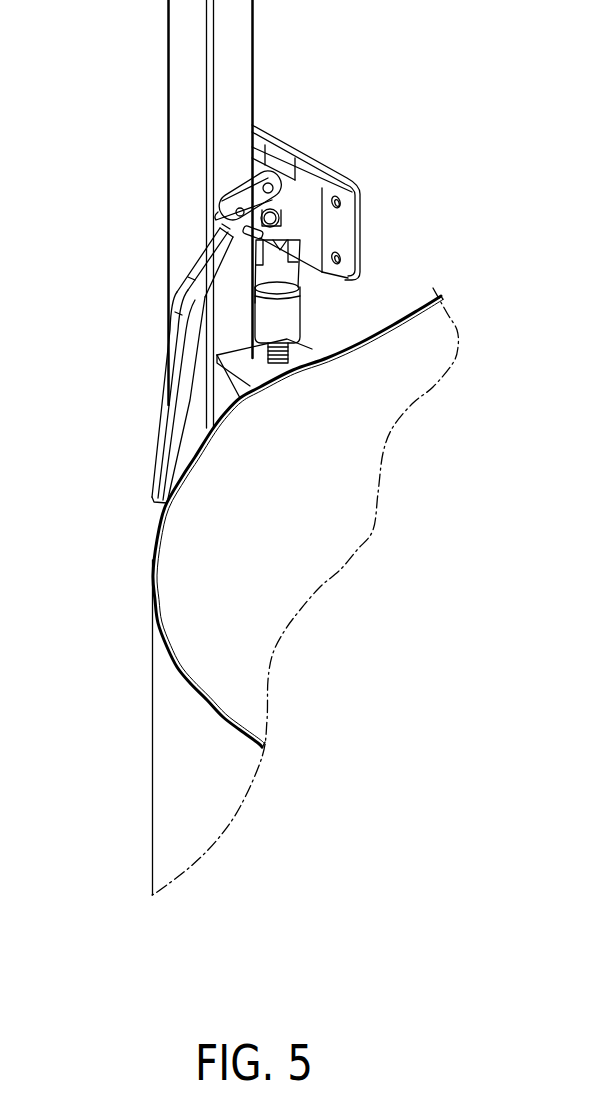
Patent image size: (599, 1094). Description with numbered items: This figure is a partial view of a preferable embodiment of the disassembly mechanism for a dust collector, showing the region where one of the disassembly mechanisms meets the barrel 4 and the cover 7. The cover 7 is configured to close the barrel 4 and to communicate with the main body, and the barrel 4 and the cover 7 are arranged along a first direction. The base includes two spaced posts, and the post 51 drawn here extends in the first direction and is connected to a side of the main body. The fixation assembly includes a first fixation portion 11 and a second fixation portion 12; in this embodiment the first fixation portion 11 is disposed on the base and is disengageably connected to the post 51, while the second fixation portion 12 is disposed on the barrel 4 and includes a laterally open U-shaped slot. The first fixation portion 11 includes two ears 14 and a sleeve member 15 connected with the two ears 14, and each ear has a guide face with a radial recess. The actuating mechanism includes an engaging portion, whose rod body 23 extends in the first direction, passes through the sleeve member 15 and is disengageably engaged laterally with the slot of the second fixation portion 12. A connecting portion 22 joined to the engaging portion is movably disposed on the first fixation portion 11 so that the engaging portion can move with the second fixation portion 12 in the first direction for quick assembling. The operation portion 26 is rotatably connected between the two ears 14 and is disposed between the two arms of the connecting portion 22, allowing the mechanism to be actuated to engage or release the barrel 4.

The barrel 4 is at (187, 730).
The cover 7 is at (185, 550).
The first fixation portion 11 is at (310, 160).
The second fixation portion 12 is at (190, 333).
The ears 14 is at (312, 225).
The sleeve member 15 is at (286, 333).
The connecting portion 22 is at (257, 171).
The rod body 23 is at (300, 262).
The operation portion 26 is at (180, 398).
The post 51 is at (193, 58).